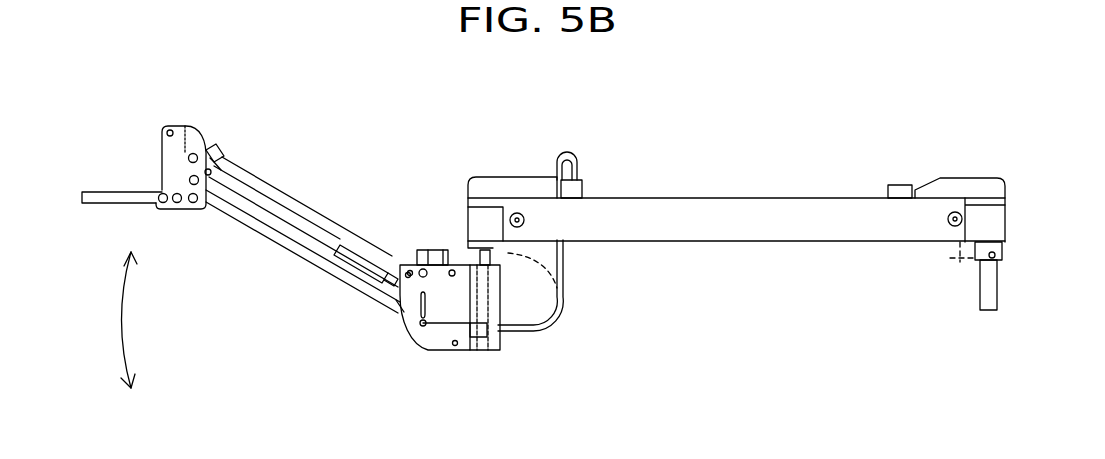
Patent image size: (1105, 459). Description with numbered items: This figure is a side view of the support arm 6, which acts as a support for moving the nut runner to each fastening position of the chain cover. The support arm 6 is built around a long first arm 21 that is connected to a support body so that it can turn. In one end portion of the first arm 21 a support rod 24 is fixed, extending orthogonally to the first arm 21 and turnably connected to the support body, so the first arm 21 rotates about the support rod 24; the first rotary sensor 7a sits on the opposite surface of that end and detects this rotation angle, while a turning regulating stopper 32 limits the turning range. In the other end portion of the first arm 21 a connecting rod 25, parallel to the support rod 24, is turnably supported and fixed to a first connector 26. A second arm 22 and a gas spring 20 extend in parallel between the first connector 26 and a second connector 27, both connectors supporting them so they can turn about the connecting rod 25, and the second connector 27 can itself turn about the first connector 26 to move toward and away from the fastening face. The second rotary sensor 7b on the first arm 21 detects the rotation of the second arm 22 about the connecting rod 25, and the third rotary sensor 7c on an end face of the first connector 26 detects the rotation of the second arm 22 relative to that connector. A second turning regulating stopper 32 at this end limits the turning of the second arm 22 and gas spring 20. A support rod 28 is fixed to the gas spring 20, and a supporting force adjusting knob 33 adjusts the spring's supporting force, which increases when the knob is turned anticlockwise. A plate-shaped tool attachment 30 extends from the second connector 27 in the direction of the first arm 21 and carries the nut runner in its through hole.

The support arm 6 is at (883, 145).
The first rotary sensor 7a is at (963, 190).
The second rotary sensor 7b is at (497, 187).
The third rotary sensor 7c is at (443, 335).
The gas spring 20 is at (323, 240).
The first arm 21 is at (786, 215).
The second arm 22 is at (288, 252).
The support rod 24 is at (988, 277).
The connecting rod 25 is at (507, 297).
The first connector 26 is at (400, 310).
The second connector 27 is at (185, 125).
The support rod 28 is at (278, 200).
The tool attachment 30 is at (102, 200).
The turning regulating stopper 32 is at (568, 280).
The supporting force adjusting knob 33 is at (430, 250).